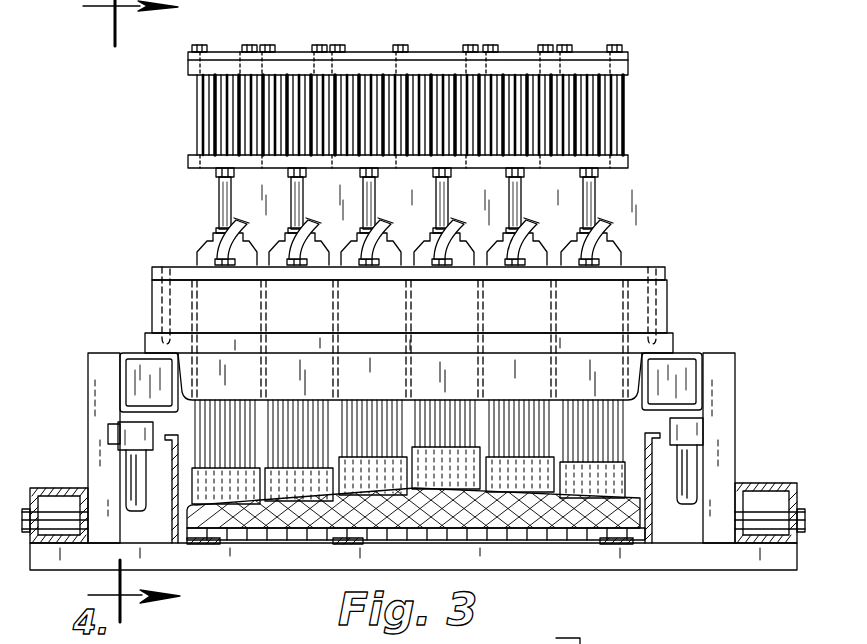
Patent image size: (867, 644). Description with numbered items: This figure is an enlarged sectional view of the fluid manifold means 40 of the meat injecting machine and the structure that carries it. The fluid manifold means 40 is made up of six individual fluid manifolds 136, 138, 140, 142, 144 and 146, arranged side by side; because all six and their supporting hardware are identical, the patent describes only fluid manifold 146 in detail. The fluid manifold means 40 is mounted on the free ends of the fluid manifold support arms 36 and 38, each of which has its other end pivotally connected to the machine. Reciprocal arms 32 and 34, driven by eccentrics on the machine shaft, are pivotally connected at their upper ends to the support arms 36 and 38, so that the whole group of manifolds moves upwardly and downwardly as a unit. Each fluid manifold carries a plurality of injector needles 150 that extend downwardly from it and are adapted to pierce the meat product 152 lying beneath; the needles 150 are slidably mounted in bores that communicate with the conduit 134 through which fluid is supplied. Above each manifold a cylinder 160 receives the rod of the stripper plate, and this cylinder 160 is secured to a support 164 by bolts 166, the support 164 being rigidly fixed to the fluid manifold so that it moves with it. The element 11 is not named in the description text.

The cylinder 160 is at (290, 122).
The support 164 is at (320, 197).
The conduit 134 is at (300, 222).
The fluid manifold means 40 is at (698, 273).
The fluid manifold 146 is at (238, 324).
The fluid manifold 144 is at (310, 324).
The fluid manifold 142 is at (382, 324).
The fluid manifold 140 is at (455, 324).
The fluid manifold 138 is at (528, 324).
The fluid manifold 136 is at (601, 324).
The fluid manifold support arm 38 is at (135, 352).
The fluid manifold support arm 36 is at (688, 352).
The reciprocal arm 34 is at (137, 467).
The reciprocal arm 32 is at (685, 462).
The injector needles 150 is at (545, 432).
The meat product 152 is at (317, 517).
The side walls 11 is at (170, 523).
The bolts 166 is at (540, 643).